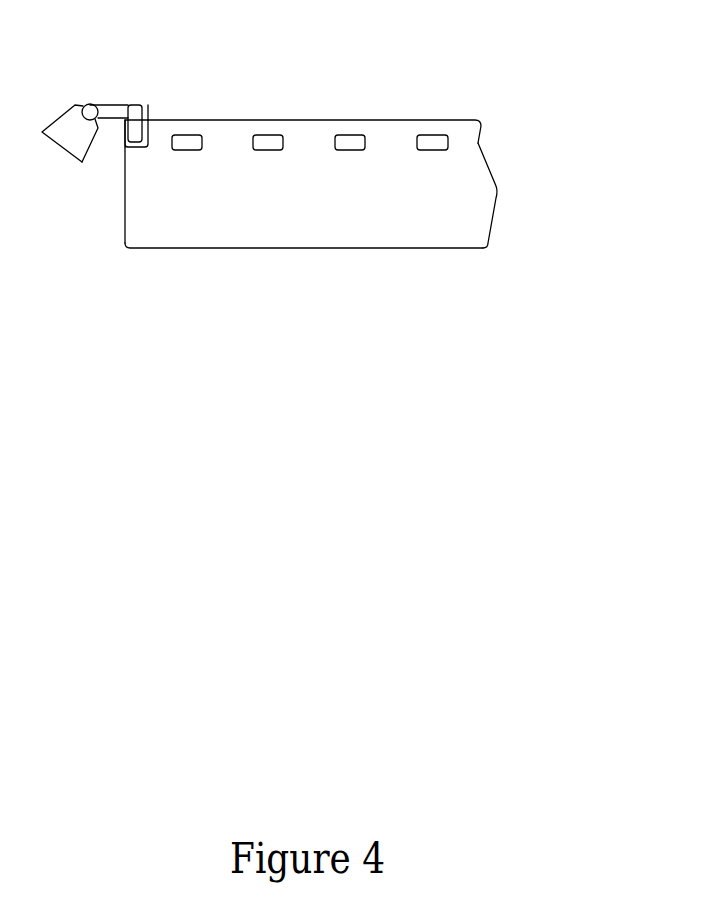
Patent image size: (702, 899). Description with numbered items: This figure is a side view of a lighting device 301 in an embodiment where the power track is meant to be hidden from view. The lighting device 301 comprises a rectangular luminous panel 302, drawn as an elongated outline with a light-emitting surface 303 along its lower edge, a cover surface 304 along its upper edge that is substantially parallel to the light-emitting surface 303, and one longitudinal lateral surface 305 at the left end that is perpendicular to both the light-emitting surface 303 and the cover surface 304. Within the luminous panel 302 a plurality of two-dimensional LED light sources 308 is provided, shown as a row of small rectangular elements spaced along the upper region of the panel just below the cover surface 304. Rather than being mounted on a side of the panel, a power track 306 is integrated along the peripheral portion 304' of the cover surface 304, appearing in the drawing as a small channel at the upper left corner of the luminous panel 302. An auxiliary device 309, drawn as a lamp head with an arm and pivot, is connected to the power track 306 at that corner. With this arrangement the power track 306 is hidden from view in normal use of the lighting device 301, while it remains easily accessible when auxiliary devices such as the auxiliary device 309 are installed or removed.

The lighting device 301 is at (309, 163).
The rectangular luminous panel 302 is at (450, 218).
The light-emitting surface 303 is at (250, 248).
The cover surface 304 is at (314, 88).
The peripheral portion of the cover surface 304' is at (180, 97).
The longitudinal lateral surface 305 is at (122, 207).
The power track 306 is at (148, 106).
The 2D LED light sources 308 is at (270, 135).
The auxiliary device 309 is at (73, 150).